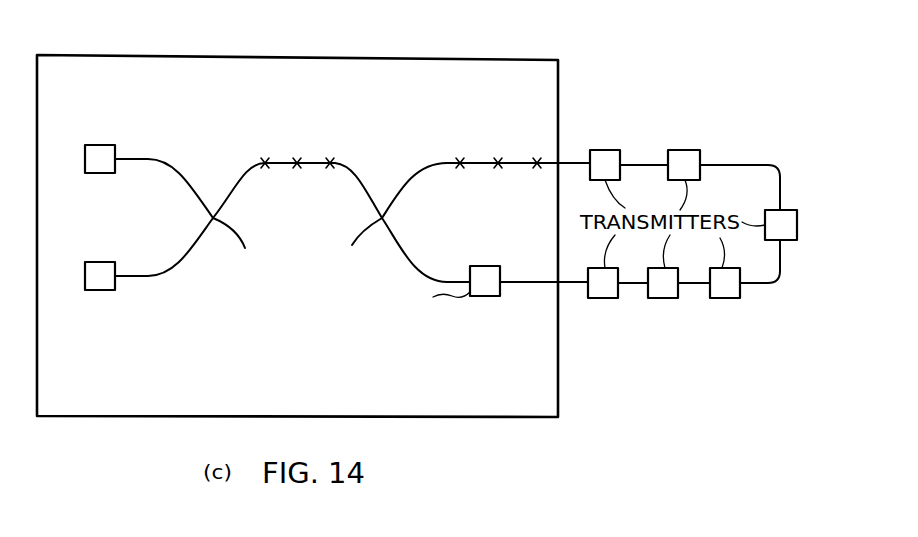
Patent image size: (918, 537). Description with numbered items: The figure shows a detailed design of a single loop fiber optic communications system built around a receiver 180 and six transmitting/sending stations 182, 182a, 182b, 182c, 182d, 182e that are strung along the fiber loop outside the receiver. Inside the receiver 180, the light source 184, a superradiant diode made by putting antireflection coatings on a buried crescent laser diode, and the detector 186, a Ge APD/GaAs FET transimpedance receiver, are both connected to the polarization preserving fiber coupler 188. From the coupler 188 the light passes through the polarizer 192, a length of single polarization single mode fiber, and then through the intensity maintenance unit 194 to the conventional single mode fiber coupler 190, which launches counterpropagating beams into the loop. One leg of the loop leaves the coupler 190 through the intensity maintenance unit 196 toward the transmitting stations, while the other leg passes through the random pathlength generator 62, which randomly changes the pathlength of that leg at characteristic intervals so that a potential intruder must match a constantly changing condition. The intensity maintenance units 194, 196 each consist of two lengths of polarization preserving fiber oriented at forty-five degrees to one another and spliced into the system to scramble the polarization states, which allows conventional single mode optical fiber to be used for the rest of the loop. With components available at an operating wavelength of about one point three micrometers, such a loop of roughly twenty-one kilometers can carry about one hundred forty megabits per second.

The receiver 180 is at (268, 63).
The light source 184 is at (104, 174).
The detector 186 is at (100, 291).
The fiber coupler 188 is at (213, 218).
The fiber coupler 190 is at (382, 219).
The polarizer 192 is at (312, 162).
The intensity maintenance unit 194 is at (351, 179).
The intensity maintenance unit 196 is at (480, 165).
The random pathlength generator 62 is at (498, 296).
The transmitting/sending station 182 is at (612, 150).
The transmitting/sending station 182a is at (683, 152).
The transmitting/sending station 182b is at (797, 225).
The transmitting/sending station 182c is at (740, 297).
The transmitting/sending station 182d is at (665, 298).
The transmitting/sending station 182e is at (605, 298).